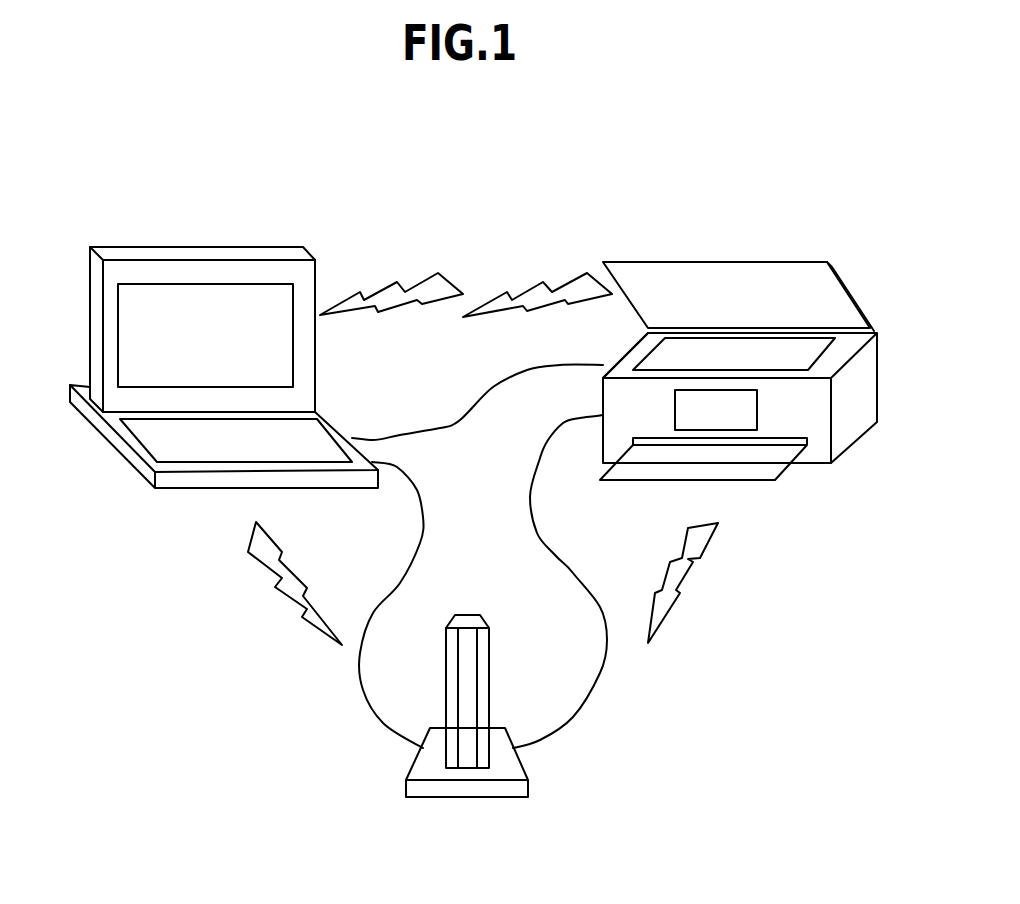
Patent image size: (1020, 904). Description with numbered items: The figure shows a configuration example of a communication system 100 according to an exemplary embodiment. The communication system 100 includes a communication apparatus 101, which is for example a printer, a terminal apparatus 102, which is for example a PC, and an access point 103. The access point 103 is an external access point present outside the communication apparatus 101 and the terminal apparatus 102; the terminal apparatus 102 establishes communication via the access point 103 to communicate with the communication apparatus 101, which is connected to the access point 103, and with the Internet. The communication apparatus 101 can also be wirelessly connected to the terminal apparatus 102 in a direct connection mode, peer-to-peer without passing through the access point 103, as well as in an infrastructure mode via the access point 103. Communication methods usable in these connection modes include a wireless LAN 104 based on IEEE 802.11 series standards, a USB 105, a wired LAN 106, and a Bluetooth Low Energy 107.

The communication system 100 is at (468, 203).
The communication apparatus 101 is at (712, 262).
The terminal apparatus 102 is at (190, 247).
The access point 103 is at (462, 798).
The wireless local area network (LAN) 104 is at (388, 285).
The universal serial bus (USB) 105 is at (405, 432).
The wired LAN 106 is at (367, 707).
The Bluetooth Low Energy 107 is at (536, 285).